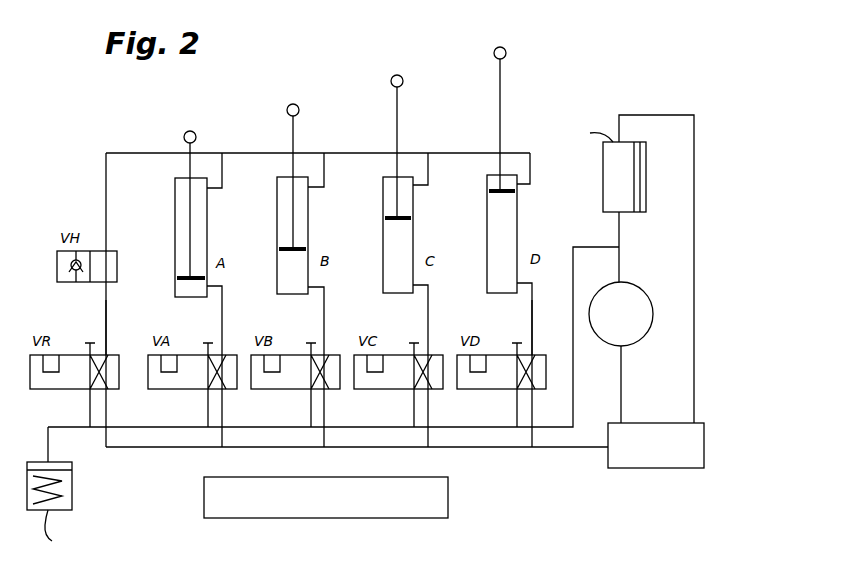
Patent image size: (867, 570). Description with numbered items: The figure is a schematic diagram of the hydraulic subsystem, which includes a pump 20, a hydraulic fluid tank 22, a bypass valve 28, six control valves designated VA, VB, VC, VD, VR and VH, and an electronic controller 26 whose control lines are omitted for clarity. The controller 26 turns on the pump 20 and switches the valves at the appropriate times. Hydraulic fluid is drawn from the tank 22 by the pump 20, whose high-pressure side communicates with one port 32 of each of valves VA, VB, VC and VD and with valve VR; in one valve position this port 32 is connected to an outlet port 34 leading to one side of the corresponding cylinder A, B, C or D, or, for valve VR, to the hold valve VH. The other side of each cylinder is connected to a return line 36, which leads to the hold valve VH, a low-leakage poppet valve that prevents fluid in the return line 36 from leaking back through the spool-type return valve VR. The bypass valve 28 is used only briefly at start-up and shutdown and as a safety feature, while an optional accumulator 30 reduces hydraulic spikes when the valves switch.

The pump 20 is at (645, 292).
The hydraulic fluid tank 22 is at (647, 468).
The electronic controller 26 is at (448, 502).
The bypass valve 28 is at (603, 192).
The accumulator 30 is at (72, 485).
The port 32 is at (90, 403).
The outlet port 34 is at (106, 346).
The return line 36 is at (132, 153).